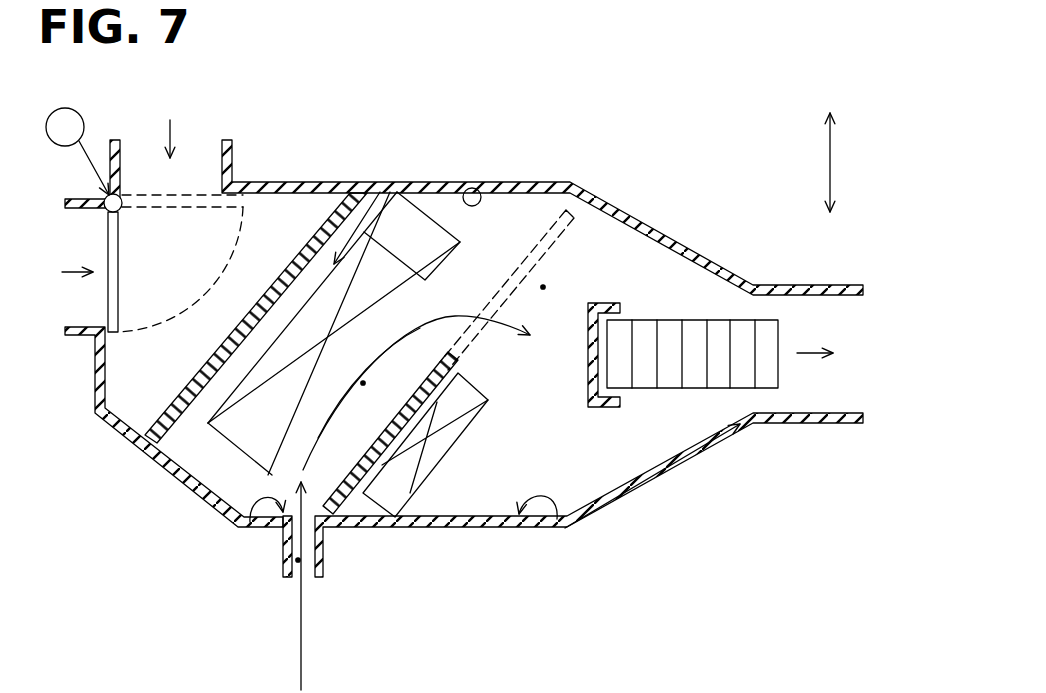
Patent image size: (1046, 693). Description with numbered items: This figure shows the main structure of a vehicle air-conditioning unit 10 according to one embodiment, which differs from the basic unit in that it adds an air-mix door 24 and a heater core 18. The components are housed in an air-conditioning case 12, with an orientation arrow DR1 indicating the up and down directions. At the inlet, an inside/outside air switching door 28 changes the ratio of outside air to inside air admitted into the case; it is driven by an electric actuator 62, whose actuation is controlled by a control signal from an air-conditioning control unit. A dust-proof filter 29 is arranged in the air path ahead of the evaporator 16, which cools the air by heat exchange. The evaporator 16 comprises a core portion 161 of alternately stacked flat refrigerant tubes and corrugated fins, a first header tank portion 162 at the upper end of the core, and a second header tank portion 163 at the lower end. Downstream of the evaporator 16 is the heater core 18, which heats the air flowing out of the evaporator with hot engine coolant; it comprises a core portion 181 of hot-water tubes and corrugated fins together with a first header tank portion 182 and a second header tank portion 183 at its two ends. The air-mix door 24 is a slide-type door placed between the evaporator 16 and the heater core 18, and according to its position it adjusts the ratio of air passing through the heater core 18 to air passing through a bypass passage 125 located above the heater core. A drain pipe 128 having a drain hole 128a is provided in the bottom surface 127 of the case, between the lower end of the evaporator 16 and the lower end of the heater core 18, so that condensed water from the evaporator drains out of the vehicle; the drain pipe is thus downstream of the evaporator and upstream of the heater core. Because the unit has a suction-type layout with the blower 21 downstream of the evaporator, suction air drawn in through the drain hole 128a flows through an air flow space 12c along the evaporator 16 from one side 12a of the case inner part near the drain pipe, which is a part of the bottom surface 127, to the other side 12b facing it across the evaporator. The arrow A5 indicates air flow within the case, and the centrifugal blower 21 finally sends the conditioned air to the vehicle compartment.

The vehicle air-conditioning unit 10 is at (596, 108).
The air-conditioning case 12 is at (452, 192).
The one side of the inner part of the air-conditioning case 12a is at (283, 545).
The other side of the inner part of the air-conditioning case 12b is at (486, 194).
The air flow space 12c is at (362, 527).
The evaporator 16 is at (376, 190).
The core portion 161 is at (380, 300).
The first header tank portion 162 is at (408, 212).
The second header tank portion 163 is at (197, 467).
The heater core 18 is at (485, 402).
The core portion 181 is at (445, 458).
The first header tank portion 182 is at (491, 404).
The second header tank portion 183 is at (396, 516).
The blower 21 is at (690, 328).
The air-mix door 24 is at (363, 386).
The inside/outside air switching door 28 is at (107, 231).
The dust-proof filter 29 is at (307, 240).
The electric actuator 62 is at (62, 108).
The bypass passage 125 is at (545, 286).
The bottom surface 127 is at (262, 524).
The drain pipe 128 is at (282, 574).
The drain hole 128a is at (298, 563).
The air flow A5 is at (455, 318).
The up-down direction DR1 is at (833, 160).